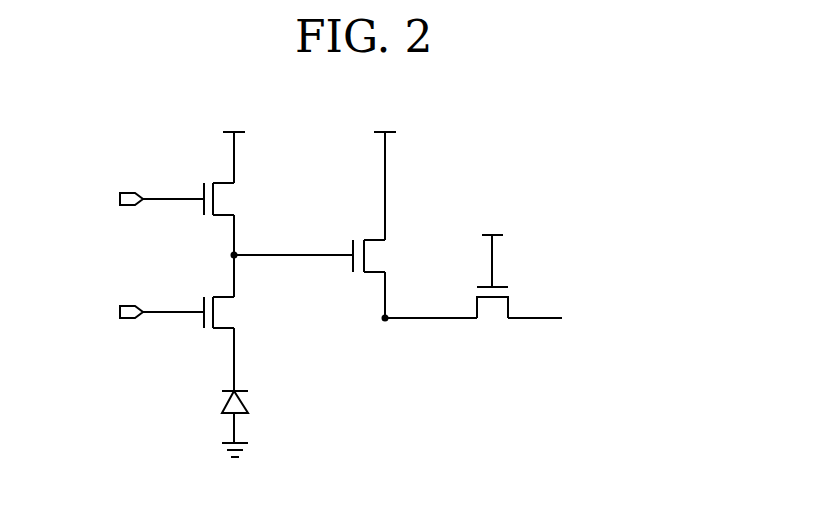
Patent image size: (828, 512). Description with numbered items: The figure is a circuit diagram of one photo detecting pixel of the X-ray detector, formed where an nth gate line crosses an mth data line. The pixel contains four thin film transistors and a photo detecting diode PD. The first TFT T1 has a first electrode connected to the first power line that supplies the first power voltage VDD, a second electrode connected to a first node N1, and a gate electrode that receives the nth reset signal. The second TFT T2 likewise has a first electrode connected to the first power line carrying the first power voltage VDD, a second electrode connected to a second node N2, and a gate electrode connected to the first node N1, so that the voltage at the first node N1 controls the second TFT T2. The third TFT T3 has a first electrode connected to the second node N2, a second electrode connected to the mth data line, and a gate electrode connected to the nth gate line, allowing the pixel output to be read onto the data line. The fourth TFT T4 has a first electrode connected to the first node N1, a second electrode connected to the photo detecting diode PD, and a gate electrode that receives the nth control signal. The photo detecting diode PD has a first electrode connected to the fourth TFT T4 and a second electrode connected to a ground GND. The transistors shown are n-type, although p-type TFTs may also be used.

The first power voltage VDD is at (310, 172).
The first TFT T1 is at (233, 199).
The first node N1 is at (292, 256).
The fourth TFT T4 is at (233, 312).
The photo detecting diode PD is at (253, 385).
The ground GND is at (236, 466).
The second TFT T2 is at (382, 256).
The second node N2 is at (426, 310).
The third TFT T3 is at (492, 318).